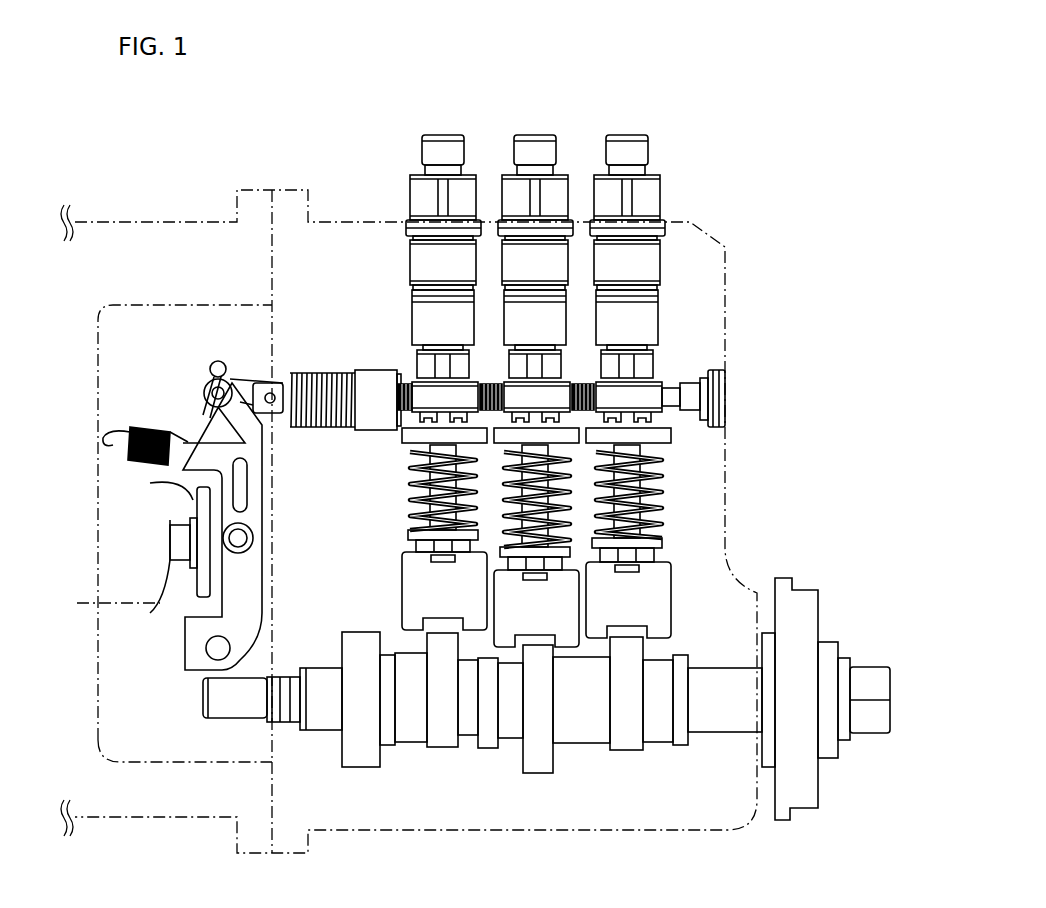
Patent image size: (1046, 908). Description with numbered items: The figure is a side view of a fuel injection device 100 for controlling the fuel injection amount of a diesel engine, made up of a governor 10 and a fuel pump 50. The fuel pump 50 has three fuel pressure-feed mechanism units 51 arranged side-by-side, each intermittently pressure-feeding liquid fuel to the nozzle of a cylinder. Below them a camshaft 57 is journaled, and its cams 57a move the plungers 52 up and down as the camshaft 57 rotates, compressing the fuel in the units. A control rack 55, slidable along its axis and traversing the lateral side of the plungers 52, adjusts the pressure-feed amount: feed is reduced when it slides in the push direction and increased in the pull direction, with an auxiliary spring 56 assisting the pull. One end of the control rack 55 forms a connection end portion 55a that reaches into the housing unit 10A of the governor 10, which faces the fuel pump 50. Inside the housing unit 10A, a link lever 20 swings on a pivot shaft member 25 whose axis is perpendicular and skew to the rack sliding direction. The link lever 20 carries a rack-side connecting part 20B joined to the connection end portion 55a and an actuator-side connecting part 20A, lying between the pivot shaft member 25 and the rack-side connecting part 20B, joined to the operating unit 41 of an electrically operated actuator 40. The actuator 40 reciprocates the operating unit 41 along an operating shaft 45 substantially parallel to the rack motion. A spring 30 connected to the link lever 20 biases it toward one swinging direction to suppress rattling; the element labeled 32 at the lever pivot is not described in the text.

The fuel injection device 100 is at (622, 83).
The governor 10 is at (130, 220).
The housing unit 10A is at (228, 318).
The fuel pump 50 is at (690, 222).
The fuel pressure-feed mechanism unit 51 is at (405, 180).
The plunger 52 is at (407, 438).
The control rack 55 is at (405, 372).
The connection end portion 55a is at (280, 382).
The auxiliary spring 56 is at (313, 428).
The camshaft 57 is at (660, 743).
The cam 57a is at (440, 748).
The link lever 20 is at (265, 600).
The actuator-side connecting part 20A is at (255, 533).
The rack-side connecting part 20B is at (208, 380).
The pivot shaft member 25 is at (210, 655).
The spring 30 is at (143, 427).
The pivot shaft 32 is at (245, 545).
The actuator 40 is at (82, 478).
The operating unit 41 is at (200, 504).
The operating shaft 45 is at (180, 585).